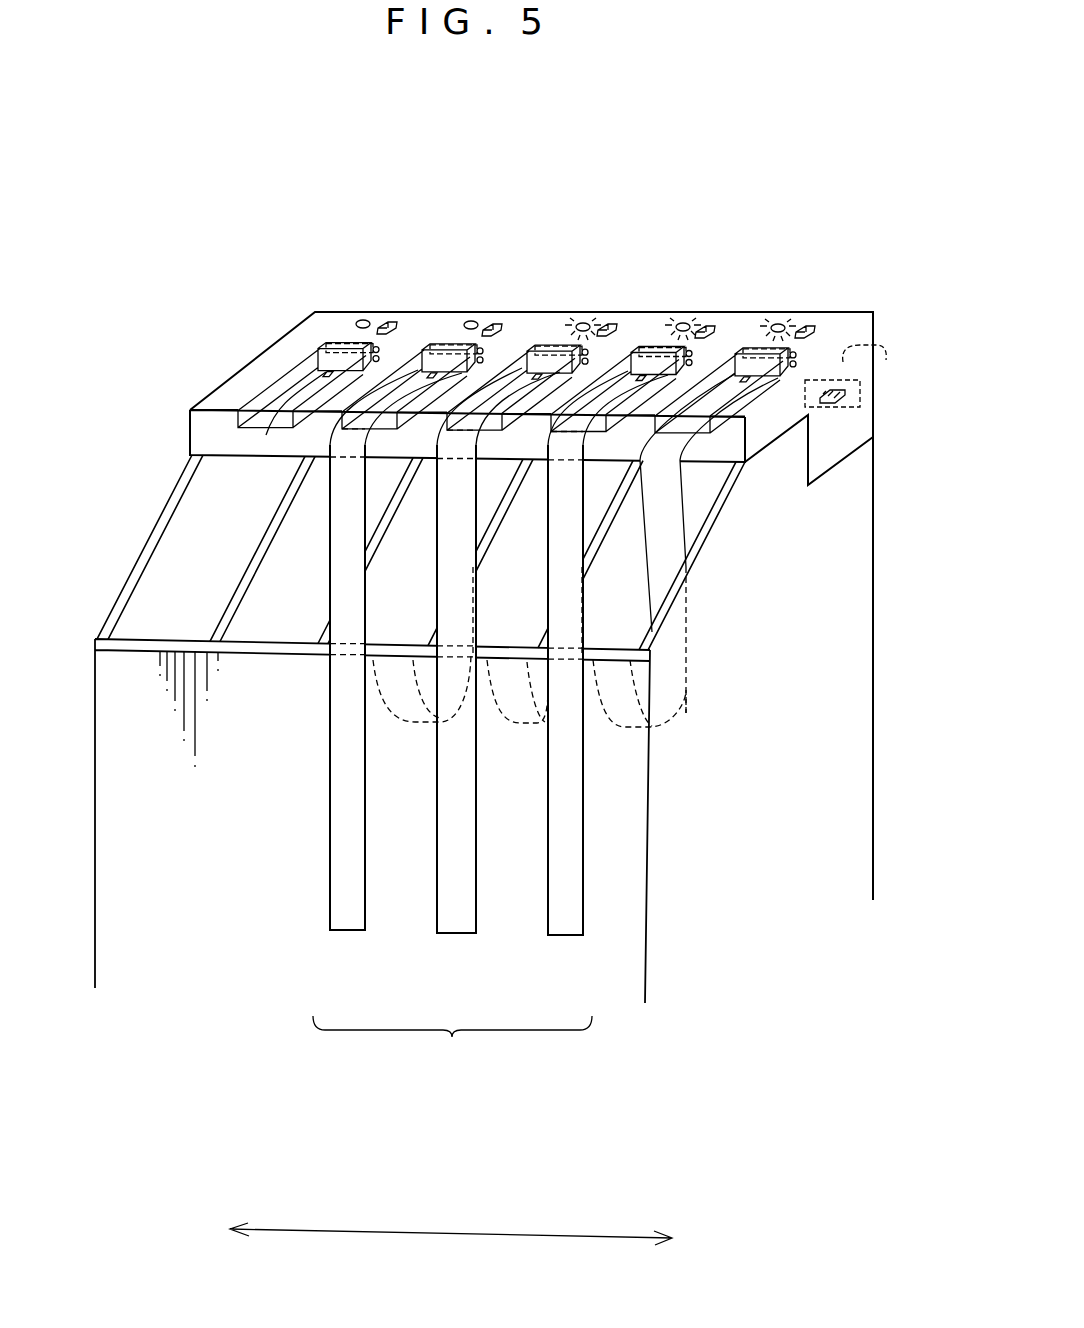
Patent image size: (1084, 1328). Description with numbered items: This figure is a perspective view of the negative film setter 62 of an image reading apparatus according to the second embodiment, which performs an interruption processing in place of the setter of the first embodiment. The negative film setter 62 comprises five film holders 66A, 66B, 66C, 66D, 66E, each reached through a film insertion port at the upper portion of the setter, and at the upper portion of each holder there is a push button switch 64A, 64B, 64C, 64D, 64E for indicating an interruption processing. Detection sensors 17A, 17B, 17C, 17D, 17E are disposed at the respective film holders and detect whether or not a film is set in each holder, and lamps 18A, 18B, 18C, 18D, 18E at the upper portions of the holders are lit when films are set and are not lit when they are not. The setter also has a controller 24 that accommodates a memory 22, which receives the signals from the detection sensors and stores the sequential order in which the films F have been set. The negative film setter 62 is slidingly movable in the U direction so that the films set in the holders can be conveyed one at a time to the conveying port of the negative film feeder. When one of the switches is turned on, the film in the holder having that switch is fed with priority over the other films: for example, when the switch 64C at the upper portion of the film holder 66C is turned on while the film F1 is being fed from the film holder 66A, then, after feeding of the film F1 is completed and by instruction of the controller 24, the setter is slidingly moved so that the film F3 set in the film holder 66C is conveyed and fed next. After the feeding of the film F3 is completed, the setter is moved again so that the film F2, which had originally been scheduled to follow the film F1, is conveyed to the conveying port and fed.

The negative film setter 62 is at (190, 230).
The film holder 66E is at (337, 328).
The film holder 66D is at (442, 328).
The film holder 66C is at (543, 328).
The film holder 66B is at (643, 328).
The film holder 66A is at (747, 328).
The push button switch 64E is at (393, 318).
The push button switch 64D is at (498, 320).
The push button switch 64C is at (613, 320).
The push button switch 64B is at (711, 322).
The push button switch 64A is at (811, 322).
The lamp 18E is at (365, 317).
The lamp 18D is at (473, 318).
The lamp 18C is at (585, 320).
The lamp 18B is at (685, 320).
The lamp 18A is at (780, 321).
The detection sensor 17E is at (290, 413).
The detection sensor 17D is at (395, 411).
The detection sensor 17C is at (500, 413).
The detection sensor 17B is at (604, 414).
The detection sensor 17A is at (708, 415).
The memory 22 is at (862, 405).
The controller 24 is at (886, 354).
The film F3 is at (347, 930).
The film F2 is at (457, 933).
The film F1 is at (562, 935).
The films F is at (452, 1043).
The U direction U is at (458, 1233).